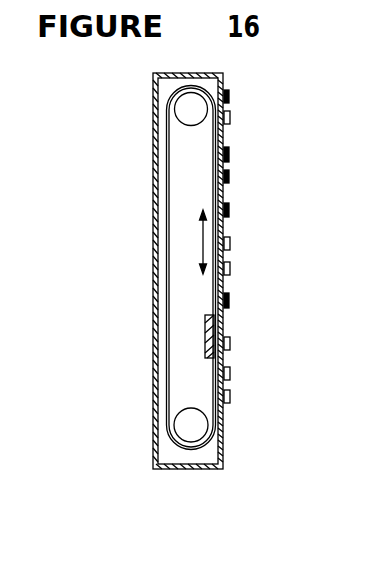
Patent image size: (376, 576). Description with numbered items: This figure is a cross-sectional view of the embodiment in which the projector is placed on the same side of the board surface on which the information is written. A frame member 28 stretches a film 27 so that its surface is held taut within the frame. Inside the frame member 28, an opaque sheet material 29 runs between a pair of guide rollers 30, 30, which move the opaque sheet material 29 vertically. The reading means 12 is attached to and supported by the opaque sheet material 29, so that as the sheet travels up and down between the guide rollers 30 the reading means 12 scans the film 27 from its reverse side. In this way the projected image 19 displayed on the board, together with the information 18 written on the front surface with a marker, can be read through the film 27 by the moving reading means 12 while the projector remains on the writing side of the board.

The frame member 28 is at (170, 73).
The opaque sheet material 29 is at (224, 166).
The projected image 19 is at (228, 212).
The film 27 is at (218, 254).
The reading means 12 is at (214, 333).
The information 18 is at (230, 373).
The guide rollers 30 is at (193, 433).